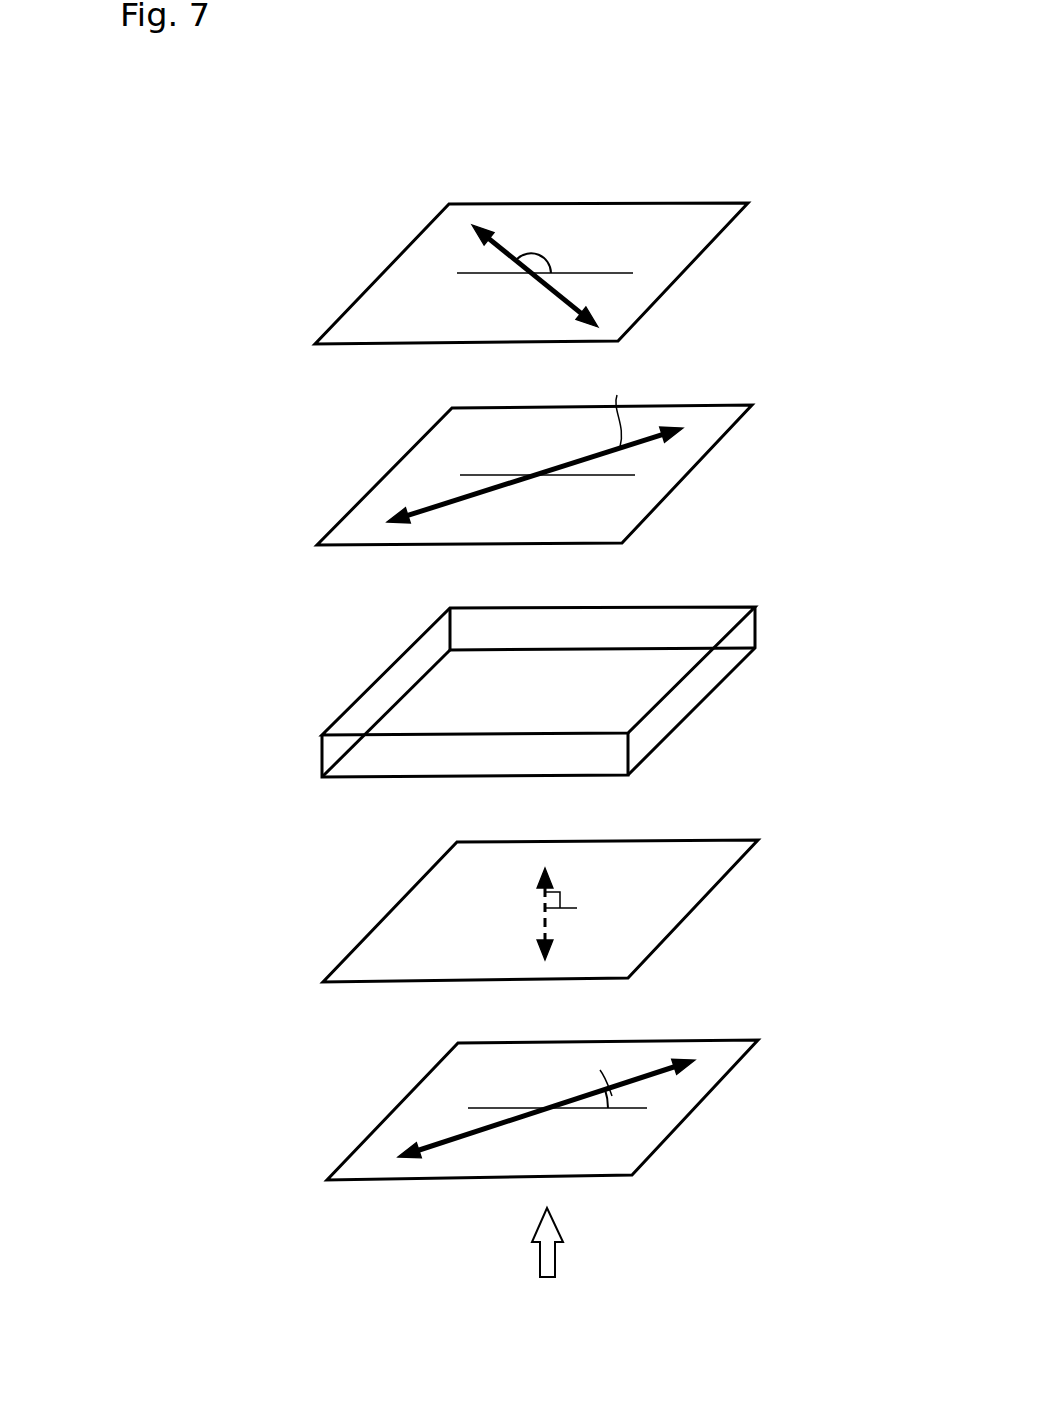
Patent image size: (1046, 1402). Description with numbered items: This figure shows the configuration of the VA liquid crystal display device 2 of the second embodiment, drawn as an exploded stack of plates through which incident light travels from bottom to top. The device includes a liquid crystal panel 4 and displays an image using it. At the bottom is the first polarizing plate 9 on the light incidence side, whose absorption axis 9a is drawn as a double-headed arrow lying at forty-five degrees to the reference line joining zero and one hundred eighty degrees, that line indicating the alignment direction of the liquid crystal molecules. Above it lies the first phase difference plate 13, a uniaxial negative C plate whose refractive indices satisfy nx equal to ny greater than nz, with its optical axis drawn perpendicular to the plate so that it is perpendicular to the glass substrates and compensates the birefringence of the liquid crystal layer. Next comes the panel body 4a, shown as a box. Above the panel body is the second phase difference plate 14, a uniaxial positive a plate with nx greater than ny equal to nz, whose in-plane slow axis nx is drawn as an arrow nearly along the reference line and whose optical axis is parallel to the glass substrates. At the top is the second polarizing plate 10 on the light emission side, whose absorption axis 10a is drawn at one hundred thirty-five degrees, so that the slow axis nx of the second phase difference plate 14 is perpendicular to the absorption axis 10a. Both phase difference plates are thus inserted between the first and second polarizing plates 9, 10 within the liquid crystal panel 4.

The VA liquid crystal display device 2 is at (607, 46).
The liquid crystal panel 4 is at (598, 192).
The panel body 4a is at (648, 740).
The second polarizing plate 10 is at (635, 308).
The absorption axis 10a is at (505, 245).
The second phase difference plate 14 is at (625, 520).
The first phase difference plate 13 is at (642, 947).
The first polarizing plate 9 is at (640, 1153).
The absorption axis 9a is at (457, 1143).